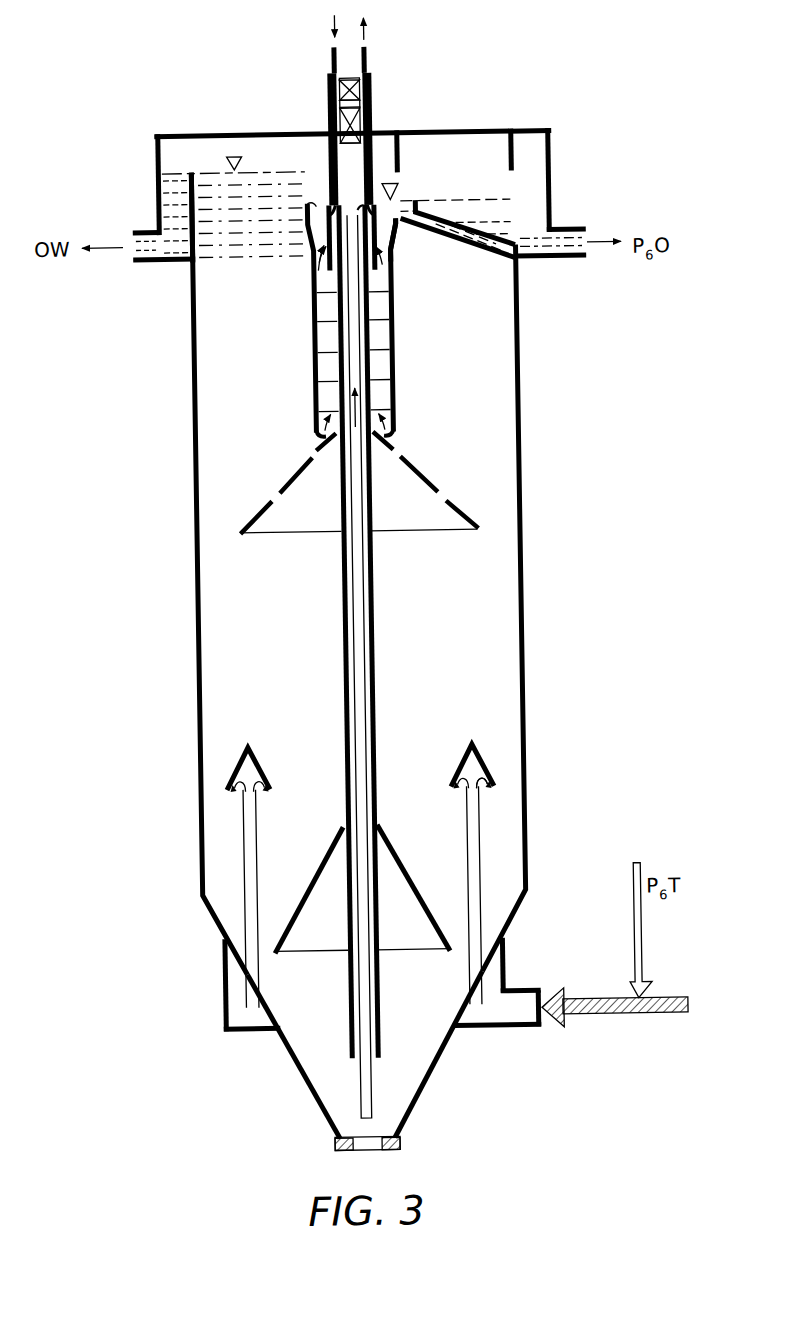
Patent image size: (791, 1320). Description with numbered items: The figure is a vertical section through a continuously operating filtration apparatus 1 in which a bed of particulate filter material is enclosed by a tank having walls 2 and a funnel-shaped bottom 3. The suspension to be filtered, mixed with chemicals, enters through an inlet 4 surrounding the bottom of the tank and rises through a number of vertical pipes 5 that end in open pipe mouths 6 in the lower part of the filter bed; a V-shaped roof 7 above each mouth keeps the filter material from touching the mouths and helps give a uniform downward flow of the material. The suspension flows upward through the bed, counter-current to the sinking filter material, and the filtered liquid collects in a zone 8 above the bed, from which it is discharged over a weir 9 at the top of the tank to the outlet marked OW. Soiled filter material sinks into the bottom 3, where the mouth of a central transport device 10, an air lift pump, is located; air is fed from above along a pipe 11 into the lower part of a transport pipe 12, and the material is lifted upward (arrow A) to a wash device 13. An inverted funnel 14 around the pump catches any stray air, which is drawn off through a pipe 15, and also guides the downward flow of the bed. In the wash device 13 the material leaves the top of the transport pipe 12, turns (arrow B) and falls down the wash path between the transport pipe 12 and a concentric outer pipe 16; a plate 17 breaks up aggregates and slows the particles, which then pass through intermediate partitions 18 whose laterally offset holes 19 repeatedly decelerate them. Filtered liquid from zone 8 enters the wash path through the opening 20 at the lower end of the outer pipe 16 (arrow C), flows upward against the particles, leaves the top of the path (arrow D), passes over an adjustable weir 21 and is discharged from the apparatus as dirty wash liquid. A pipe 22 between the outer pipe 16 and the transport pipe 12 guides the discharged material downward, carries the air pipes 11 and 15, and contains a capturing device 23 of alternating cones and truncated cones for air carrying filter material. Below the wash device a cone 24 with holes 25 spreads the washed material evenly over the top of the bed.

The filtration apparatus 1 is at (524, 424).
The walls 2 is at (194, 394).
The funnel-shaped bottom 3 is at (285, 1058).
The inlet 4 is at (481, 1030).
The vertical pipes 5 is at (475, 897).
The pipe mouths 6 is at (477, 797).
The roof 7 is at (473, 767).
The zone of liquid filtrate 8 is at (248, 349).
The weir 9 is at (198, 172).
The transport device 10 is at (341, 926).
The pipe 11 is at (336, 56).
The transport pipe 12 is at (364, 1085).
The wash device 13 is at (315, 329).
The funnel 14 is at (423, 912).
The pipe 15 is at (377, 54).
The outer pipe 16 is at (397, 300).
The plate 17 is at (383, 262).
The intermediate partitions 18 is at (321, 365).
The holes 19 is at (384, 350).
The opening 20 is at (316, 431).
The weir 21 is at (421, 205).
The pipe 22 is at (366, 118).
The capturing device 23 is at (366, 88).
The cone 24 is at (421, 477).
The holes 25 is at (443, 503).
The arrow A is at (360, 396).
The arrow B is at (375, 202).
The arrow C is at (394, 432).
The arrow D is at (317, 248).